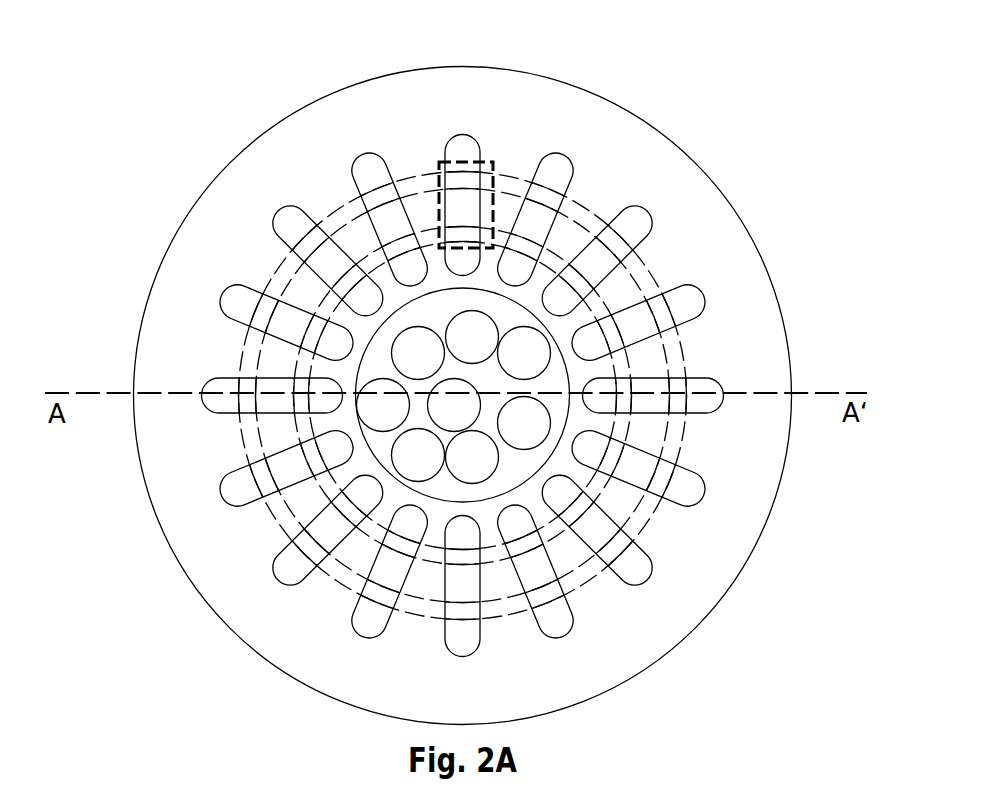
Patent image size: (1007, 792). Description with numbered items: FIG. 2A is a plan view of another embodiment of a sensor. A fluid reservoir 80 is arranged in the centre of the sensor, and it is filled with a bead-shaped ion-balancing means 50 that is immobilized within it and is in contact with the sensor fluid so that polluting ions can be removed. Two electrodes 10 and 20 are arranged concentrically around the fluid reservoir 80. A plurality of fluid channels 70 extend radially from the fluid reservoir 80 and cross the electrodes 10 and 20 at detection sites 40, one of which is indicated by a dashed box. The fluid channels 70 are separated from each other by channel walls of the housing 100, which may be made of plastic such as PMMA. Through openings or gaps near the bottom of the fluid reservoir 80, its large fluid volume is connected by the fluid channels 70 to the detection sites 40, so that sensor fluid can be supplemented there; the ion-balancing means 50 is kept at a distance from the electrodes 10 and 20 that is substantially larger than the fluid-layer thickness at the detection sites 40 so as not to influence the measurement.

The housing 100 is at (565, 84).
The electrode 10 is at (600, 300).
The electrode 20 is at (677, 358).
The detection site 40 is at (465, 160).
The ion-balancing means 50 is at (383, 412).
The fluid channel 70 is at (235, 300).
The fluid reservoir 80 is at (505, 317).